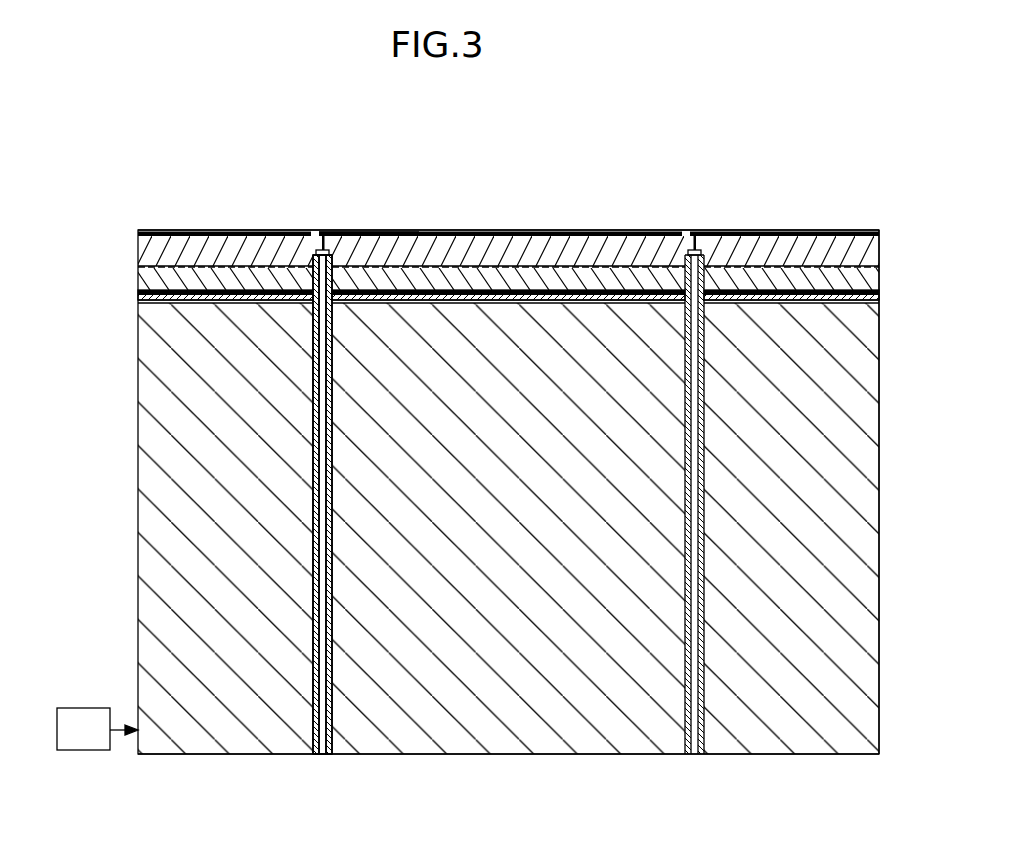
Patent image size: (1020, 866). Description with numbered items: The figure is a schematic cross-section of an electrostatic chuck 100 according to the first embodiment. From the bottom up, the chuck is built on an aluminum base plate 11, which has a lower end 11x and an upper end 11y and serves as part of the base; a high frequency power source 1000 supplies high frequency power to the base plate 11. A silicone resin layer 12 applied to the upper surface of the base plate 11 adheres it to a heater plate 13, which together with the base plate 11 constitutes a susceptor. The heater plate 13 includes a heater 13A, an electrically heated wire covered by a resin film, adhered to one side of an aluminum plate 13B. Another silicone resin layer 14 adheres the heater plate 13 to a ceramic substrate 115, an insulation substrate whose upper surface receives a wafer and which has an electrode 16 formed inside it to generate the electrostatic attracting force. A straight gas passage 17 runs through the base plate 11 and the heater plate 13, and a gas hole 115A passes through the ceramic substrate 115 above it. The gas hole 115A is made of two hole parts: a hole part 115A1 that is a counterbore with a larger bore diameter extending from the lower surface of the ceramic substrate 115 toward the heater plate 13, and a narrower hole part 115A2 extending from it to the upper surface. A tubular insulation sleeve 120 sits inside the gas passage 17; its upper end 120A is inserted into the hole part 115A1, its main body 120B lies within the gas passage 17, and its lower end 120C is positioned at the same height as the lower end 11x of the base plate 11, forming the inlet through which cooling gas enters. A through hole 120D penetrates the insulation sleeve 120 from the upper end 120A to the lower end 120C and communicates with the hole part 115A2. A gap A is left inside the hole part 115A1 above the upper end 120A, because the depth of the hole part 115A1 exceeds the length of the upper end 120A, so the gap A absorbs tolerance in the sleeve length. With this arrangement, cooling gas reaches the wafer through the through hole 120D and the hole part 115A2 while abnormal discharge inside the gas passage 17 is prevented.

The electrostatic chuck 100 is at (781, 196).
The base plate 11 is at (138, 361).
The lower end of the base plate 11x is at (860, 755).
The upper end of the base plate 11y is at (850, 292).
The silicone resin layer 12 is at (138, 302).
The heater plate 13 is at (62, 275).
The heater 13A is at (138, 297).
The aluminum plate 13B is at (138, 291).
The silicone resin layer 14 is at (138, 270).
The electrode 16 is at (237, 236).
The gas passage 17 is at (313, 490).
The ceramic substrate 115 is at (138, 247).
The gas hole 115A is at (520, 178).
The hole part 115A1 is at (335, 262).
The hole part 115A2 is at (332, 244).
The insulation sleeve 120 is at (300, 386).
The upper end 120A is at (317, 250).
The main body 120B is at (313, 420).
The lower end 120C is at (320, 755).
The through hole 120D is at (323, 456).
The high frequency power source 1000 is at (83, 751).
The gap A is at (324, 247).